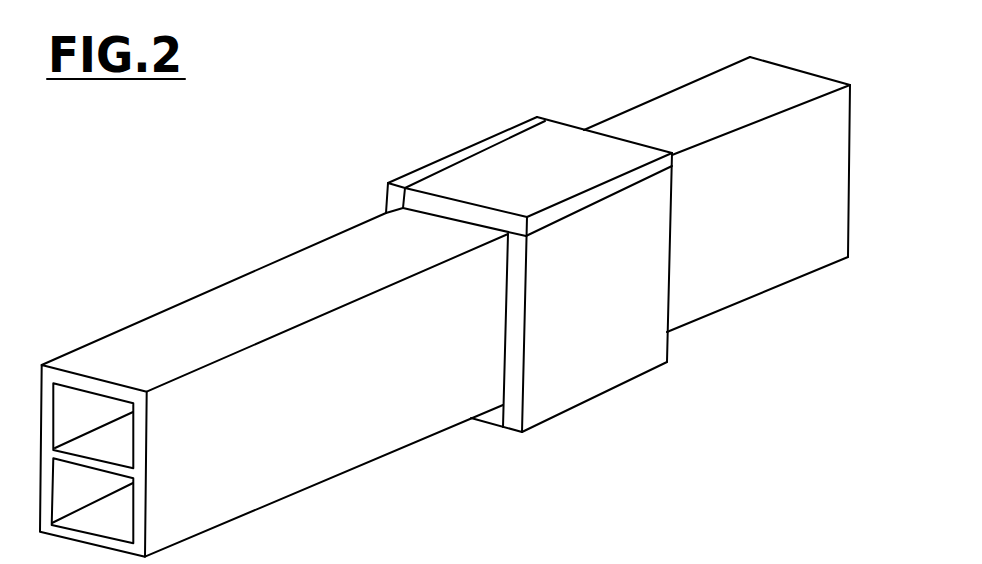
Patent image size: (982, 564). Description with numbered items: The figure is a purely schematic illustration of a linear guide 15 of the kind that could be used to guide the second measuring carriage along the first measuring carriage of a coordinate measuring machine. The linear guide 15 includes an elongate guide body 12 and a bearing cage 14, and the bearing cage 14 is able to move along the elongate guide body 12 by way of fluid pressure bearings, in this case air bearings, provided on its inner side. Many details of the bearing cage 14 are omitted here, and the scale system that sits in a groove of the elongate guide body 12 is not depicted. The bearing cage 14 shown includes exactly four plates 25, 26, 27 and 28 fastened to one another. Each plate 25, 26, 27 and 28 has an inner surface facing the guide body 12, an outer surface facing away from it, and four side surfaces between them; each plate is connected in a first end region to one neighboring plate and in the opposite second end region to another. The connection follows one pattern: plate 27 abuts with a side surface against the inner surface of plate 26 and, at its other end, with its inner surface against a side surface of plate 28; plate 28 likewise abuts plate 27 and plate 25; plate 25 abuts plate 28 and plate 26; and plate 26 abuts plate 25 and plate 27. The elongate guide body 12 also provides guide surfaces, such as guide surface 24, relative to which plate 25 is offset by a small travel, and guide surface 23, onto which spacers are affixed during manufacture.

The elongate guide body 12 is at (72, 428).
The bearing cage 14 is at (617, 280).
The linear guide 15 is at (580, 470).
The guide surface 23 is at (315, 278).
The guide surface 24 is at (327, 415).
The plate 25 is at (493, 412).
The plate 26 is at (420, 170).
The plate 27 is at (537, 158).
The plate 28 is at (595, 317).